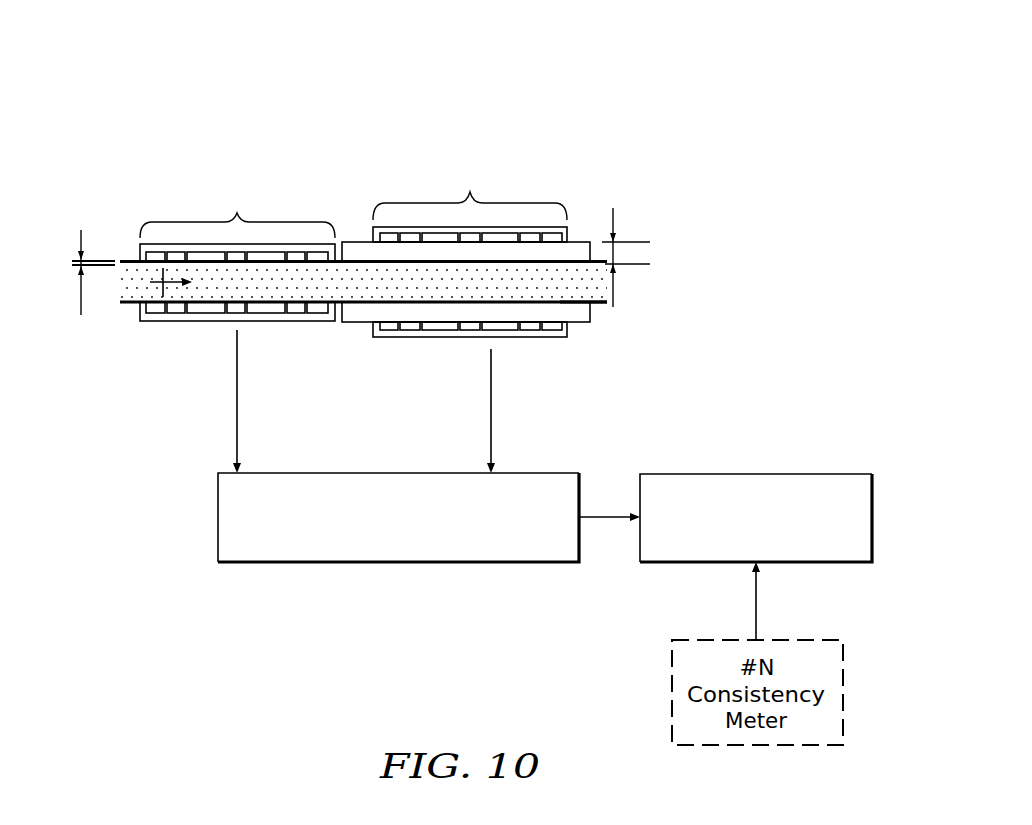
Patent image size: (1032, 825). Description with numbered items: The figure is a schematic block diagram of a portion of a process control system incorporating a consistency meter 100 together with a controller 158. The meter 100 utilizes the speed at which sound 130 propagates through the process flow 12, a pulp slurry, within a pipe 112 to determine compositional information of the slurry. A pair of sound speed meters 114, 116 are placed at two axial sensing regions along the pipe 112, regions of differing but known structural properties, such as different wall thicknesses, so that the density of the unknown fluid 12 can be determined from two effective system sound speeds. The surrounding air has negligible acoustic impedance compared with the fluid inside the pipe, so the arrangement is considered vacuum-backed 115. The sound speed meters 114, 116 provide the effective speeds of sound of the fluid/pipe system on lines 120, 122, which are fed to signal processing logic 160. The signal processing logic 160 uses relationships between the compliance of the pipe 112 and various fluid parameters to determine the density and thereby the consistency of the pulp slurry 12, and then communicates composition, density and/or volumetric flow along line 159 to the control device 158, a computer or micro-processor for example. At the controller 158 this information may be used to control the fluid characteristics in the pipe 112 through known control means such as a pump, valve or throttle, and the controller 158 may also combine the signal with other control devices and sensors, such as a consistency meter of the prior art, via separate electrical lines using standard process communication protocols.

The consistency meter 100 is at (403, 130).
The process flow 12 is at (332, 272).
The pipe 112 is at (603, 303).
The first sound speed meter 114 is at (188, 201).
The second sound speed meter 116 is at (551, 182).
The vacuum-backed condition 115 is at (140, 248).
The sound 130 is at (150, 282).
The first output line 120 is at (237, 362).
The second output line 122 is at (491, 405).
The signal processing logic 160 is at (218, 540).
The communication line 159 is at (612, 518).
The controller 158 is at (817, 565).